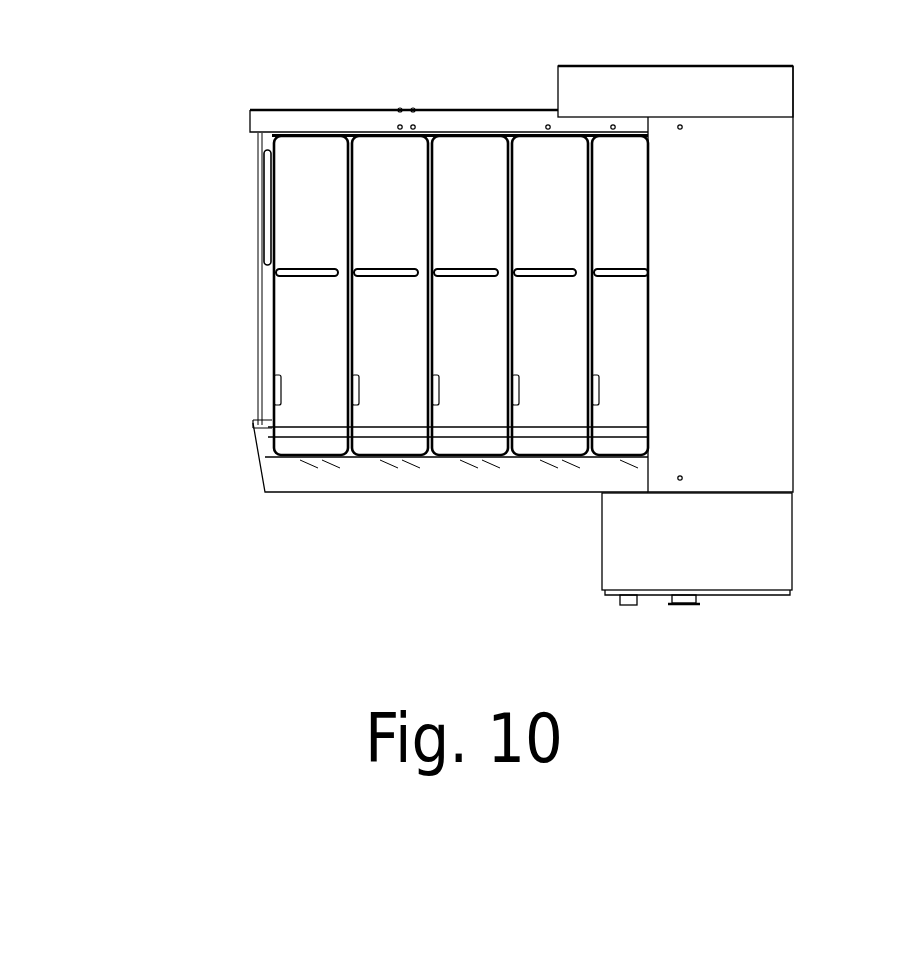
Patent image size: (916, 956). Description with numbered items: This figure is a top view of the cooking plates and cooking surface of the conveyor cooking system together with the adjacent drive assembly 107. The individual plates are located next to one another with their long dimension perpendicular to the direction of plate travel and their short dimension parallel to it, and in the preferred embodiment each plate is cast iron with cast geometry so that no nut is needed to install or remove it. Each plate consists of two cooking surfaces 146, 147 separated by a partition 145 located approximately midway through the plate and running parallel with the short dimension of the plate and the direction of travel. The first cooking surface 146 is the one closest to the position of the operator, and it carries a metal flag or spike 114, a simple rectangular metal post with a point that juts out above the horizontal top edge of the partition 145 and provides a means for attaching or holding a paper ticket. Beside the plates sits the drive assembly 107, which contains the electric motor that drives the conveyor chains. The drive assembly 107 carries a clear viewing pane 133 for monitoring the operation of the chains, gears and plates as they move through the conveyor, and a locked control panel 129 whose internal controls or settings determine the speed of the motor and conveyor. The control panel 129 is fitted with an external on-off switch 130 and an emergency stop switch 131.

The drive assembly 107 is at (775, 246).
The clear viewing pane 133 is at (700, 57).
The cooking surface 147 is at (300, 230).
The first cooking surface 146 is at (305, 362).
The partition 145 is at (300, 265).
The metal flag or spike 114 is at (390, 497).
The locked control panel 129 is at (630, 533).
The external on-off switch 130 is at (637, 612).
The emergency stop switch 131 is at (698, 612).